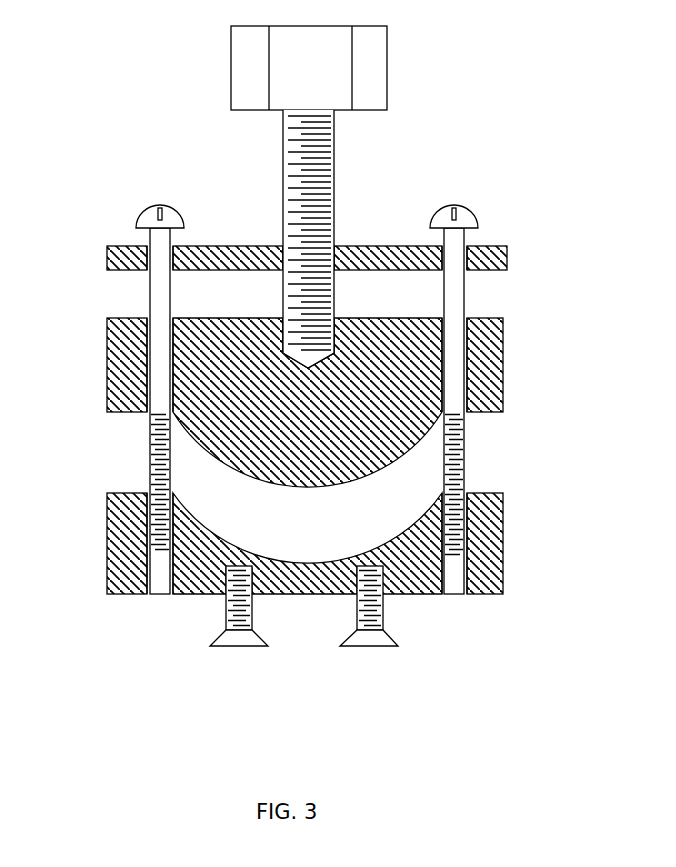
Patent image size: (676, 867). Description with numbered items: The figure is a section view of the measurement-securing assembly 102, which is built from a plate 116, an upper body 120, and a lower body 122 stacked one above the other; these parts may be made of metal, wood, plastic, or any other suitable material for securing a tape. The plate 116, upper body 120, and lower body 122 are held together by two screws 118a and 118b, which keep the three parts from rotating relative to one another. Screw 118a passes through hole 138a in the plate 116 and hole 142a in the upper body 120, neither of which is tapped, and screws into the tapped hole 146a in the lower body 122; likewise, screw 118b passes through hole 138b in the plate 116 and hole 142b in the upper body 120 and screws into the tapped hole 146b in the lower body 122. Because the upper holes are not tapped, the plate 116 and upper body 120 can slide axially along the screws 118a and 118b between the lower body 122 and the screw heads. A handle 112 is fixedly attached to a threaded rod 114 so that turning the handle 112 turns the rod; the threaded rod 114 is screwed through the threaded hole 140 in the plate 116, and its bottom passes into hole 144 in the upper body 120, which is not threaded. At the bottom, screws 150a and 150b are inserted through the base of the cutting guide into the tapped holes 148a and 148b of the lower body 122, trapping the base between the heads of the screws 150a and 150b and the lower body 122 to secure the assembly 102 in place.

The measurement-securing assembly 102 is at (600, 48).
The handle 112 is at (231, 58).
The threaded rod 114 is at (283, 165).
The plate 116 is at (107, 260).
The screw 118a is at (152, 208).
The screw 118b is at (445, 208).
The upper body 120 is at (107, 365).
The lower body 122 is at (107, 540).
The hole 138a is at (150, 247).
The hole 138b is at (466, 247).
The hole 140 is at (283, 247).
The hole 142a is at (147, 320).
The hole 142b is at (466, 320).
The hole 144 is at (283, 320).
The hole 146a is at (147, 494).
The hole 146b is at (463, 495).
The hole 148a is at (215, 629).
The hole 148b is at (385, 628).
The screw 150a is at (237, 647).
The screw 150b is at (381, 660).